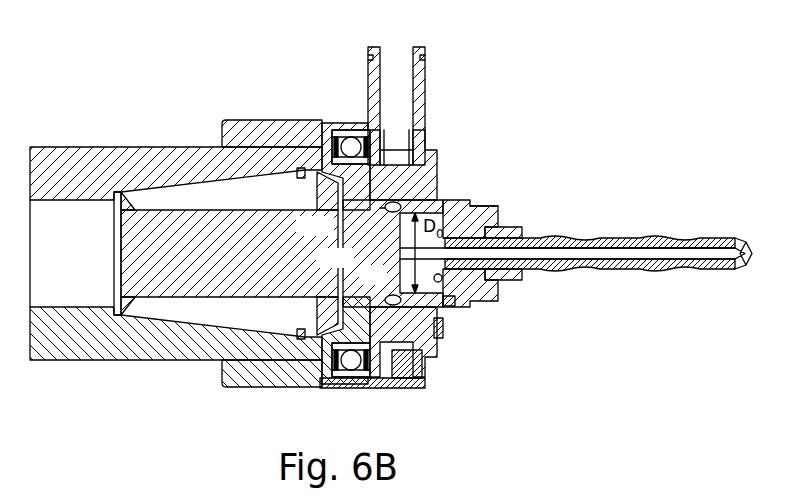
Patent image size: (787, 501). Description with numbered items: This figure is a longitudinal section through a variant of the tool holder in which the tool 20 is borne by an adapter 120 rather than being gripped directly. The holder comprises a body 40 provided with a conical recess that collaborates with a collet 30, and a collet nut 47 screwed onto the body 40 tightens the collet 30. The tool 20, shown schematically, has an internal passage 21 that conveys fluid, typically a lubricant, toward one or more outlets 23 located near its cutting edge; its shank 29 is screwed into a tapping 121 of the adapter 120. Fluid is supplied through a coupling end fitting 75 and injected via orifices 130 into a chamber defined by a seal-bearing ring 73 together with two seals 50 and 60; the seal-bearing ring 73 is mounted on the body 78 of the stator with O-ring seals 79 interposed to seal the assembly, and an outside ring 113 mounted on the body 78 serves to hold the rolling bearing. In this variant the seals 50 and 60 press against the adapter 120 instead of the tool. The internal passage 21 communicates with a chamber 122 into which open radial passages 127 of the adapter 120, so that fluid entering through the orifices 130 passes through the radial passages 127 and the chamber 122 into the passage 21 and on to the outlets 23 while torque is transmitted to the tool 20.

The tool 20 is at (603, 272).
The internal passage 21 is at (533, 256).
The outlets 23 is at (752, 240).
The shank 29 is at (487, 203).
The collet 30 is at (162, 312).
The body 40 is at (200, 332).
The collet nut 47 is at (290, 388).
The seal 50 is at (393, 300).
The seal 60 is at (447, 312).
The seal-bearing ring 73 is at (440, 336).
The coupling end fitting 75 is at (425, 110).
The body of the stator 78 is at (395, 388).
The O-ring seals 79 is at (433, 392).
The outside ring 113 is at (350, 389).
The adapter 120 is at (483, 306).
The tapping 121 is at (451, 306).
The chamber 122 is at (398, 247).
The radial passages 127 is at (398, 210).
The orifices 130 is at (438, 170).